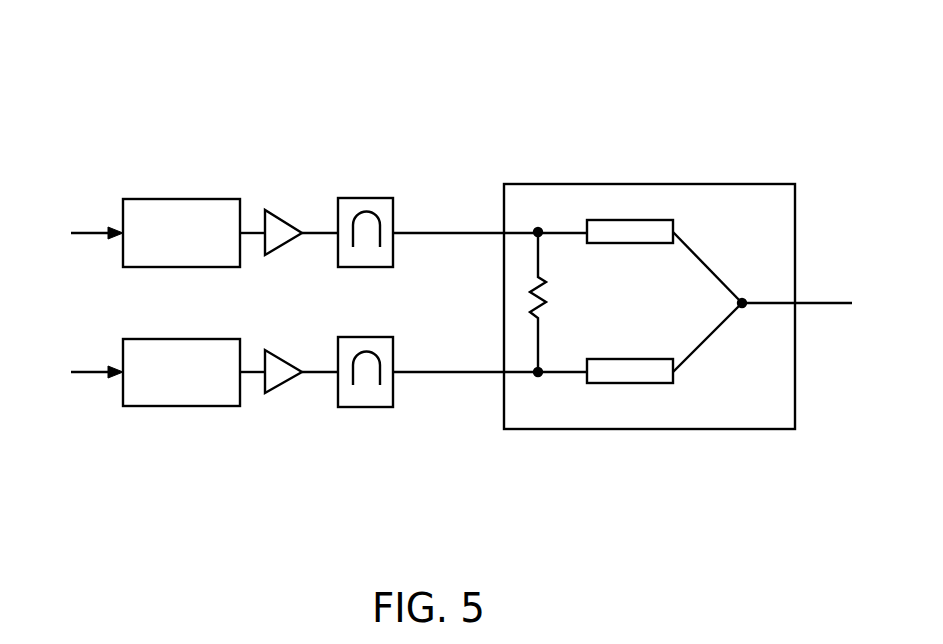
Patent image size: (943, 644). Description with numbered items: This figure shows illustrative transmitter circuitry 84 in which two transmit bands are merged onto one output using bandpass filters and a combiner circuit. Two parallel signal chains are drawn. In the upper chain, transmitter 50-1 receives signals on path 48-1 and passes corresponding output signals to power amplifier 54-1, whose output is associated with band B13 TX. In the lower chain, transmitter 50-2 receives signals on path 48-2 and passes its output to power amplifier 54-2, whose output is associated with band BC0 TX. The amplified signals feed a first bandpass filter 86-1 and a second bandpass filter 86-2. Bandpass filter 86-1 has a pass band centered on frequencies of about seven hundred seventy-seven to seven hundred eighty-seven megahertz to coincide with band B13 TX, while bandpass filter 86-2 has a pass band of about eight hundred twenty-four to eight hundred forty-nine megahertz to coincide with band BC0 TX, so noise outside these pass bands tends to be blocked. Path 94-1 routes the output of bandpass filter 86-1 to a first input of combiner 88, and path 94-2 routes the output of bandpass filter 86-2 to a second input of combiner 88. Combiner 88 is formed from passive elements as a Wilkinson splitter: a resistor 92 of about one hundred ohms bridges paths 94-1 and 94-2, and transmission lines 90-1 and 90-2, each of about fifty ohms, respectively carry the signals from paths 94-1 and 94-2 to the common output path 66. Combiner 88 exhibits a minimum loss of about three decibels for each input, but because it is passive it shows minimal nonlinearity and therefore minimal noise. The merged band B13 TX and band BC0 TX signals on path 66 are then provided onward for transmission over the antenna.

The circuitry 84 is at (728, 76).
The path 48-1 is at (90, 232).
The path 48-2 is at (90, 373).
The transmitter 50-1 is at (185, 199).
The transmitter 50-2 is at (173, 406).
The power amplifier 54-1 is at (285, 212).
The power amplifier 54-2 is at (278, 393).
The bandpass filter 86-1 is at (366, 198).
The bandpass filter 86-2 is at (362, 407).
The path 94-1 is at (480, 232).
The path 94-2 is at (480, 372).
The combiner 88 is at (627, 429).
The transmission line 90-1 is at (658, 215).
The transmission line 90-2 is at (652, 383).
The resistor 92 is at (545, 300).
The path 66 is at (820, 303).